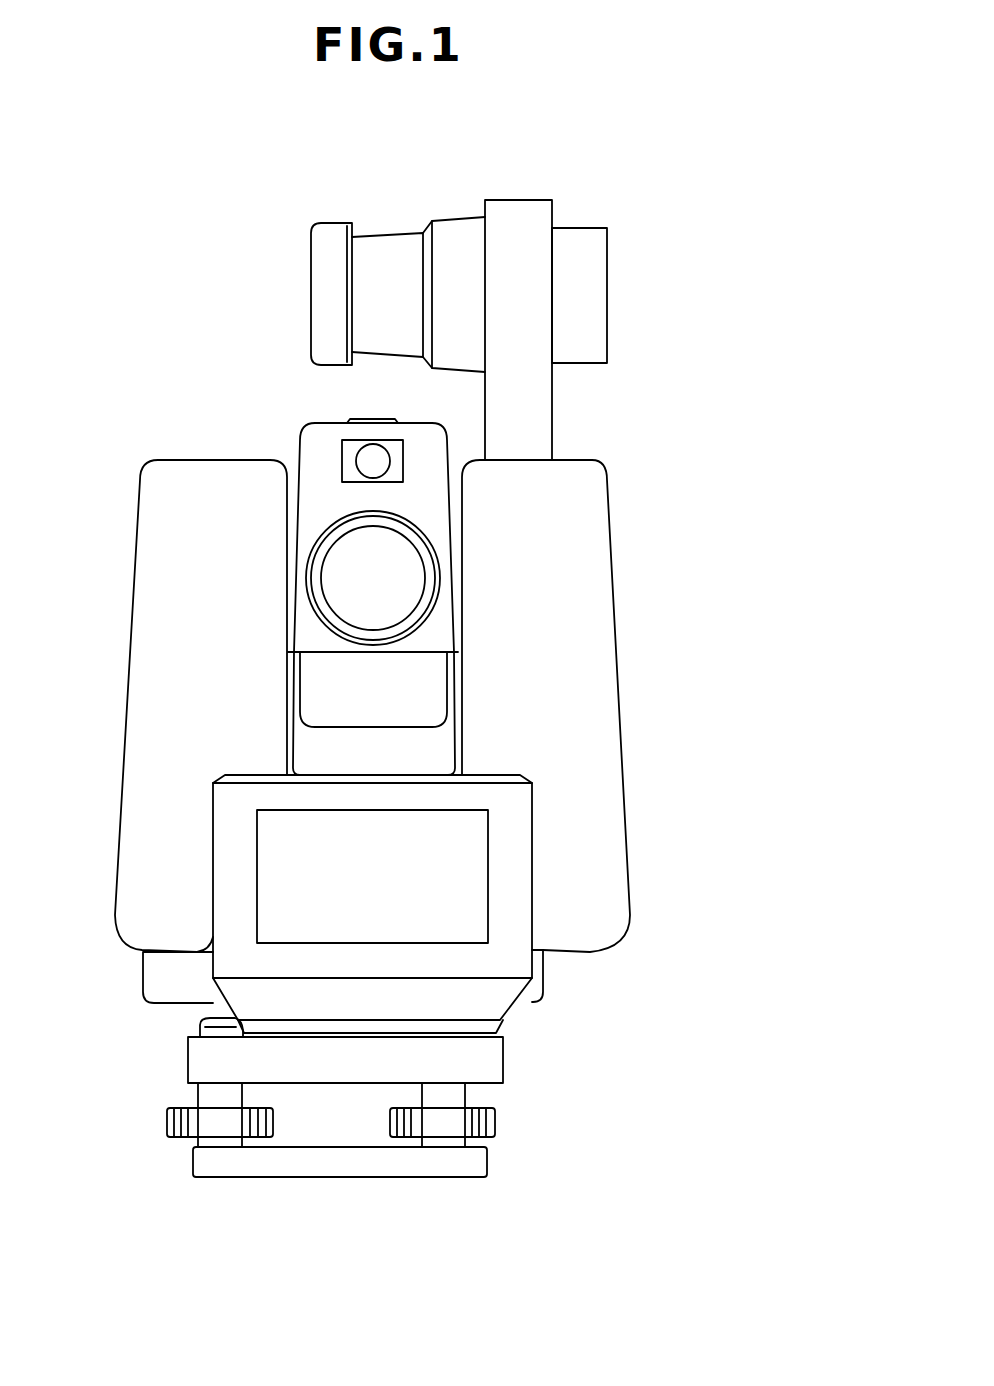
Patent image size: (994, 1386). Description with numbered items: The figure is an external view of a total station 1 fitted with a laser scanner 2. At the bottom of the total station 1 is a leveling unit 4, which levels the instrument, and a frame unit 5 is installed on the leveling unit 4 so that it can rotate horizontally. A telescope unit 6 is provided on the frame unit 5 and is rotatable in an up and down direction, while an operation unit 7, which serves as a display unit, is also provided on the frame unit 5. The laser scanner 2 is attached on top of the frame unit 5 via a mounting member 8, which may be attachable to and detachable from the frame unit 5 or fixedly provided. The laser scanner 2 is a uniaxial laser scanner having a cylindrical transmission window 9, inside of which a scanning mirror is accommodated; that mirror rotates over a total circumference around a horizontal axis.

The total station 1 is at (426, 643).
The laser scanner 2 is at (592, 226).
The leveling unit 4 is at (503, 1063).
The frame unit 5 is at (623, 728).
The telescope unit 6 is at (304, 430).
The operation unit 7 is at (532, 882).
The mounting member 8 is at (553, 418).
The transmission window 9 is at (396, 233).